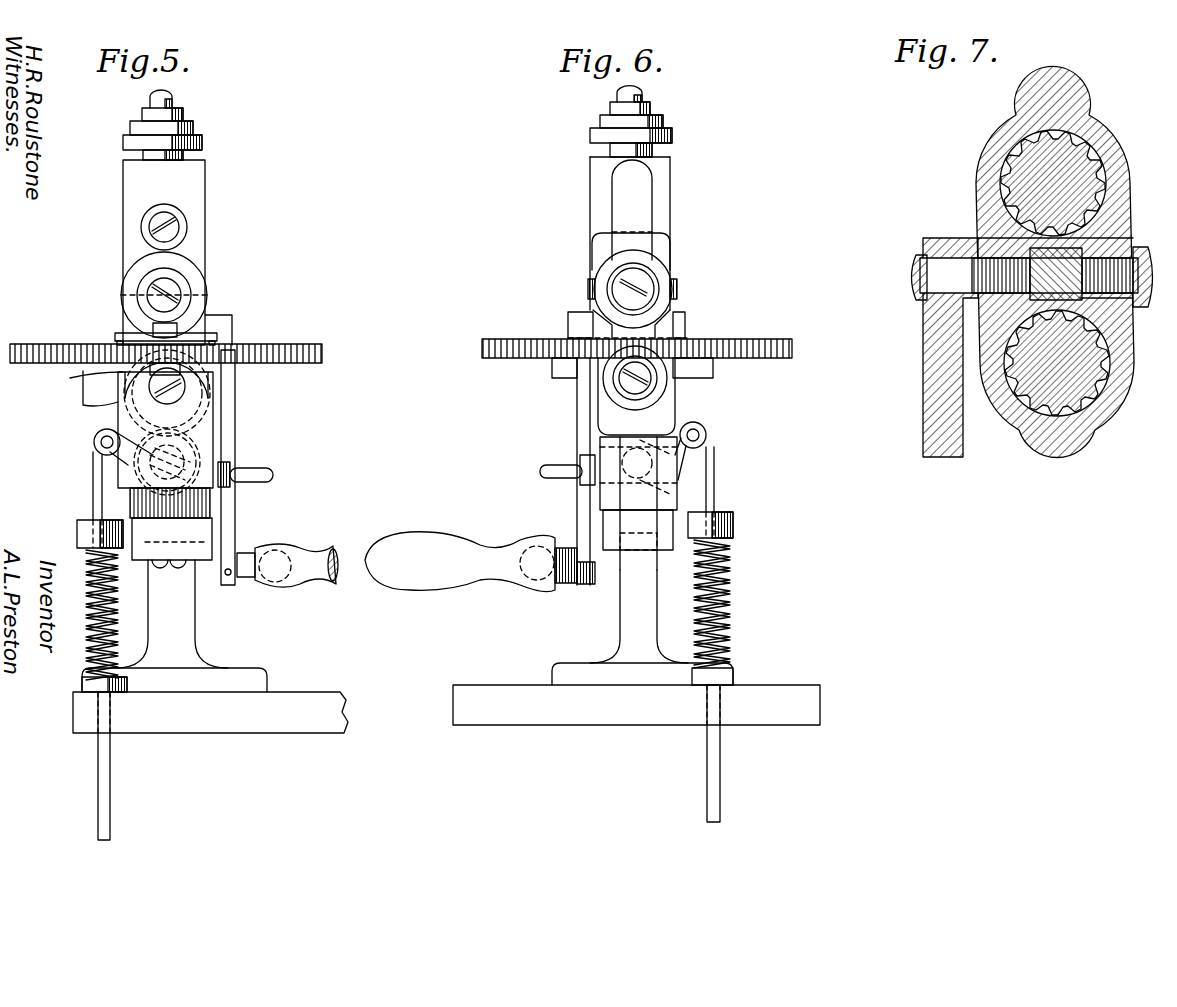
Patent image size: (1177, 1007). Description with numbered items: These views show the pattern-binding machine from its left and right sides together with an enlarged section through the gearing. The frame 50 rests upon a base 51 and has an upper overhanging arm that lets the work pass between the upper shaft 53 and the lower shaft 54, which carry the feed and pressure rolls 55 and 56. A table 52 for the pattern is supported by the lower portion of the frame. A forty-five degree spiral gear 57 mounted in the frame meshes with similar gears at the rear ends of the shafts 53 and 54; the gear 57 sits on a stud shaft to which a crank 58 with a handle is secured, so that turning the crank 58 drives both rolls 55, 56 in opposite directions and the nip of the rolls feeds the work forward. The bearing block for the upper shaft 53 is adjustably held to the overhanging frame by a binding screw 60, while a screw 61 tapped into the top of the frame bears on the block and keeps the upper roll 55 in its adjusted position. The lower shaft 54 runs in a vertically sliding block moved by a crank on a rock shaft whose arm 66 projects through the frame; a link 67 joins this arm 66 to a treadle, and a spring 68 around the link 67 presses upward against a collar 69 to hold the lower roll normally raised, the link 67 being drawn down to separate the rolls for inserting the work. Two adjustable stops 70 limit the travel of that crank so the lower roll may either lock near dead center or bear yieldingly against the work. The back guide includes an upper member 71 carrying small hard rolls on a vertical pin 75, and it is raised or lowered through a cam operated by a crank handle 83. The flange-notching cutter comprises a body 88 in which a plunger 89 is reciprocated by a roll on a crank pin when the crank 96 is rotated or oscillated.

In FIG. 5, the frame 50 is at (182, 598).
In FIG. 6, the frame 50 is at (627, 585).
In FIG. 7, the frame 50 is at (1103, 402).
In FIG. 5, the base 51 is at (245, 670).
In FIG. 6, the base 51 is at (575, 668).
In FIG. 5, the table 52 is at (272, 345).
In FIG. 6, the table 52 is at (764, 340).
In FIG. 7, the upper shaft 53 is at (1043, 178).
In FIG. 7, the lower shaft 54 is at (1023, 393).
In FIG. 5, the feed and pressure roll 55 is at (187, 275).
In FIG. 5, the feed and pressure roll 56 is at (85, 374).
In FIG. 7, the spiral gear 57 is at (1040, 247).
In FIG. 5, the crank 58 is at (230, 409).
In FIG. 6, the crank 58 is at (578, 403).
In FIG. 7, the crank 58 is at (940, 371).
In FIG. 5, the binding screw 60 is at (152, 224).
In FIG. 5, the screw 61 is at (185, 156).
In FIG. 6, the screw 61 is at (652, 152).
In FIG. 5, the arm 66 is at (118, 456).
In FIG. 5, the link 67 is at (88, 619).
In FIG. 6, the link 67 is at (733, 619).
In FIG. 5, the spring 68 is at (88, 598).
In FIG. 6, the spring 68 is at (733, 582).
In FIG. 5, the collar 69 is at (80, 523).
In FIG. 6, the collar 69 is at (734, 520).
In FIG. 6, the adjustable stops 70 is at (592, 288).
In FIG. 5, the upper member 71 is at (120, 335).
In FIG. 5, the vertical pin 75 is at (206, 319).
In FIG. 5, the crank handle 83 is at (252, 479).
In FIG. 5, the body 88 is at (214, 426).
In FIG. 5, the plunger 89 is at (215, 374).
In FIG. 5, the crank 96 is at (232, 502).